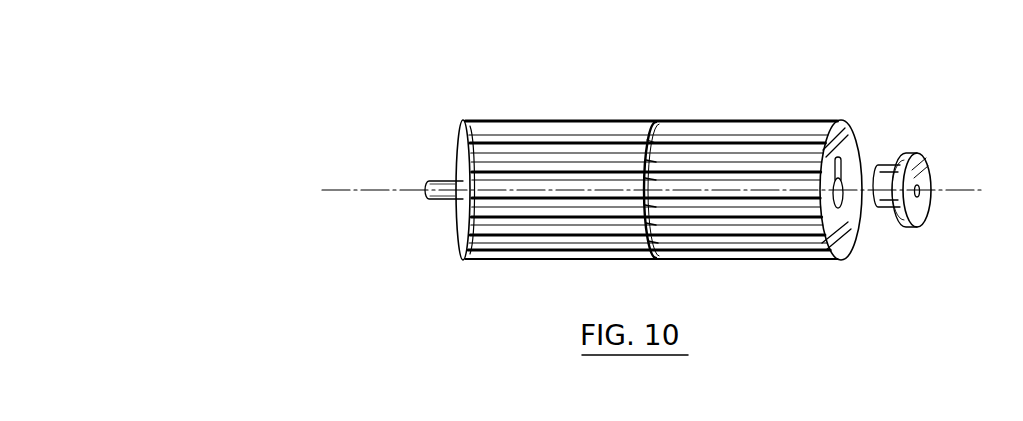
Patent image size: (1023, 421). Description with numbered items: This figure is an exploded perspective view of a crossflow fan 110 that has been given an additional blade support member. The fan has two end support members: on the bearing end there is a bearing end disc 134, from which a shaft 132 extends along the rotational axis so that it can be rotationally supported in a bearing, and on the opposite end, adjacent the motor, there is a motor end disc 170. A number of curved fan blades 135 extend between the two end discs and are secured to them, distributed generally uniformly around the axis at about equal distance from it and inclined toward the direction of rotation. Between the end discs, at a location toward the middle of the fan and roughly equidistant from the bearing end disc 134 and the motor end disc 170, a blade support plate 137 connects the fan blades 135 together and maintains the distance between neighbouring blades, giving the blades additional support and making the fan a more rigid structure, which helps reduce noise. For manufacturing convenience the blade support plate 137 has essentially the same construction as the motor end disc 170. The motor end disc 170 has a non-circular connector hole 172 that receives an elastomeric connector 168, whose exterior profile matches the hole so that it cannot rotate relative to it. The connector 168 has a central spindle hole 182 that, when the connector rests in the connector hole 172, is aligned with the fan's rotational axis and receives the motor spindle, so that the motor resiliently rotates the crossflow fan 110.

The crossflow fan 110 is at (659, 211).
The shaft 132 is at (431, 181).
The bearing end disc 134 is at (460, 148).
The fan blades 135 is at (546, 135).
The blade support plate 137 is at (653, 122).
The elastomeric connector 168 is at (942, 186).
The motor end disc 170 is at (876, 177).
The connector hole 172 is at (842, 200).
The central spindle hole 182 is at (918, 196).